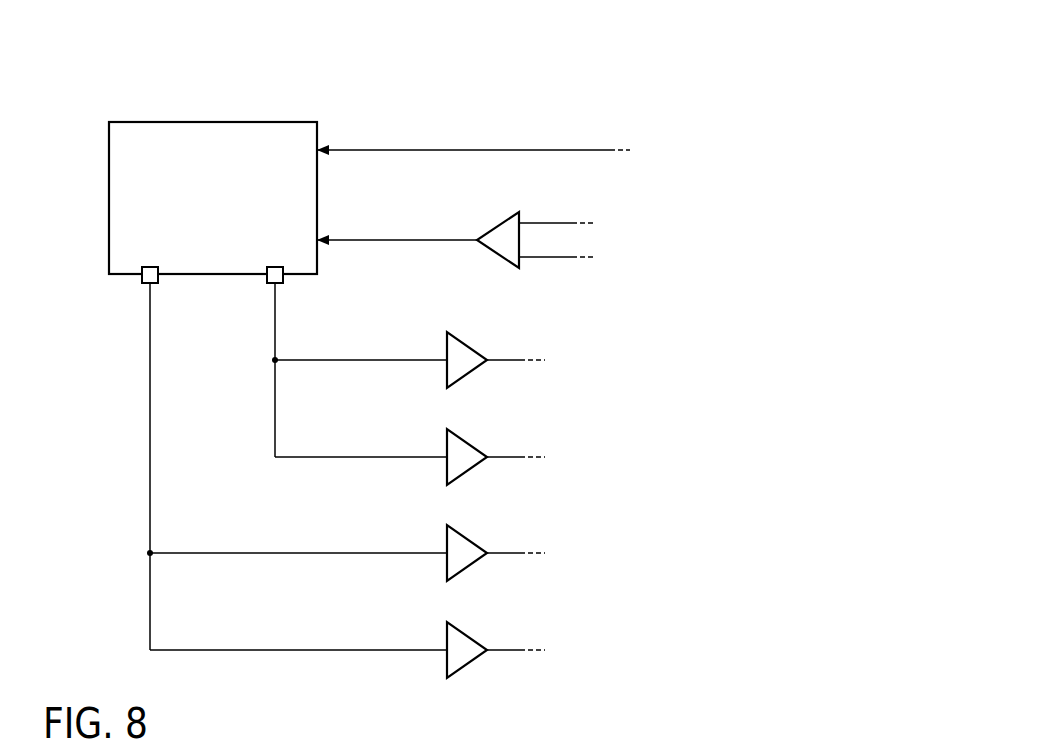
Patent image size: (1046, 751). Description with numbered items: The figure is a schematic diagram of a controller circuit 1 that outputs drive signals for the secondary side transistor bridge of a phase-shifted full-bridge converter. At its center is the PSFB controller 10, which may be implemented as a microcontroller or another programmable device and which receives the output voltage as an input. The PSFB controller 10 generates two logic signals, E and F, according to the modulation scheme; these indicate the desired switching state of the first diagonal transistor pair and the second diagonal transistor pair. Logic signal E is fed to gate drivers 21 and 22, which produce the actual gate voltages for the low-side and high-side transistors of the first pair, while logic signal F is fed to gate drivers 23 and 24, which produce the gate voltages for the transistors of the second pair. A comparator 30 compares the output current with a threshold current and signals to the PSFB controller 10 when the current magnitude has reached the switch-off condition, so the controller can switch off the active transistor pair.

The controller circuit 1 is at (638, 76).
The PSFB controller 10 is at (213, 202).
The gate driver 21 is at (466, 648).
The gate driver 22 is at (466, 551).
The gate driver 23 is at (466, 455).
The gate driver 24 is at (466, 358).
The comparator 30 is at (494, 233).